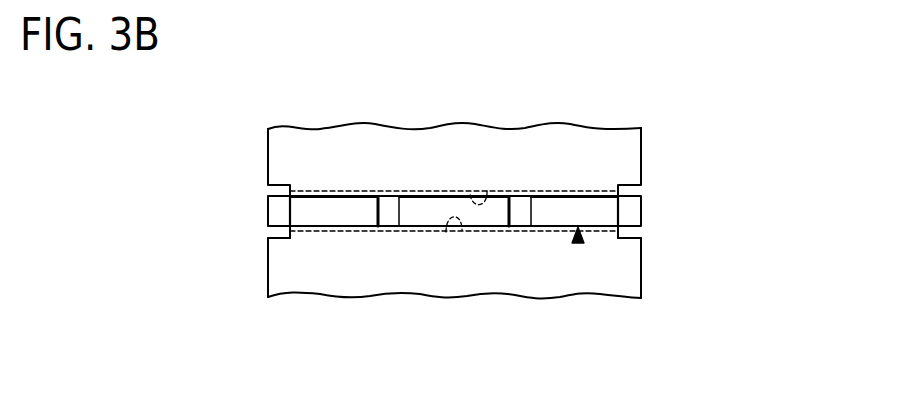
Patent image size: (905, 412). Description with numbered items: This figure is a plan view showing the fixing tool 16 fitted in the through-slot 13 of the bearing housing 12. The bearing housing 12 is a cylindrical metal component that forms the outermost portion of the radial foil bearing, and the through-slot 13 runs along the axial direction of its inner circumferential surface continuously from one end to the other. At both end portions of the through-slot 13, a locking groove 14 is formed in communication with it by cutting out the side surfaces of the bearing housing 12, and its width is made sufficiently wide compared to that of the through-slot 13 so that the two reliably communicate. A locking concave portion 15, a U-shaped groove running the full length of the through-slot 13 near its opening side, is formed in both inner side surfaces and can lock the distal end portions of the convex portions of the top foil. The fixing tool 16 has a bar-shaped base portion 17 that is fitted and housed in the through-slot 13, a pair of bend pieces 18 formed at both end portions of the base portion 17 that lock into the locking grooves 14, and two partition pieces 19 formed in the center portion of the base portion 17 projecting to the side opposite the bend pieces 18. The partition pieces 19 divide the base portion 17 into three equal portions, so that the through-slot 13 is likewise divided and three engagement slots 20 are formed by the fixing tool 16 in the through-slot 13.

The bearing housing 12 is at (268, 157).
The through-slot 13 is at (332, 225).
The locking groove 14 is at (272, 230).
The locking concave portion 15 is at (487, 191).
The fixing tool 16 is at (578, 243).
The base portion 17 is at (552, 229).
The bend piece 18 is at (268, 210).
The partition piece 19 is at (388, 212).
The engagement slot 20 is at (321, 212).